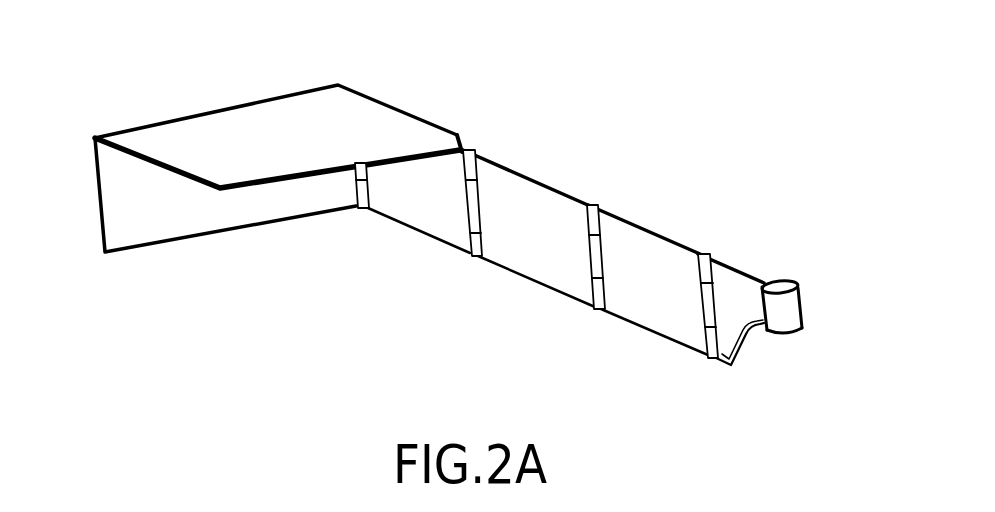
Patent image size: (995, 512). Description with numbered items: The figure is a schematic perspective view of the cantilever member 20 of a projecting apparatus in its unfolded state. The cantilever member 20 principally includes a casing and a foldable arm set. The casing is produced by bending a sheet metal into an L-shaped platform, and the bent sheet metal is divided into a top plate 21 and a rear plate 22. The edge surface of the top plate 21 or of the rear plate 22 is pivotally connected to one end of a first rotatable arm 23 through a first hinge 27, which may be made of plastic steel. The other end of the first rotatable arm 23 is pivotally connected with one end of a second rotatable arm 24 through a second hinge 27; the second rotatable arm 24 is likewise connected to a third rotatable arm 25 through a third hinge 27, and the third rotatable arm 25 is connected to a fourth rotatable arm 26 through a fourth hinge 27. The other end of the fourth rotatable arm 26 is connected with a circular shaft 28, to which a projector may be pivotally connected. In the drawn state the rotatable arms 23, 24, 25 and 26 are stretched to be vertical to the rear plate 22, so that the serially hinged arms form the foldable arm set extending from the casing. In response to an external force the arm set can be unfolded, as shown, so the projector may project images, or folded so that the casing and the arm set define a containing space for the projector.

The cantilever member 20 is at (493, 58).
The top plate 21 is at (240, 123).
The rear plate 22 is at (118, 203).
The first rotatable arm 23 is at (448, 172).
The second rotatable arm 24 is at (527, 197).
The third rotatable arm 25 is at (650, 250).
The fourth rotatable arm 26 is at (732, 285).
The hinge 27 is at (702, 352).
The circular shaft 28 is at (790, 312).